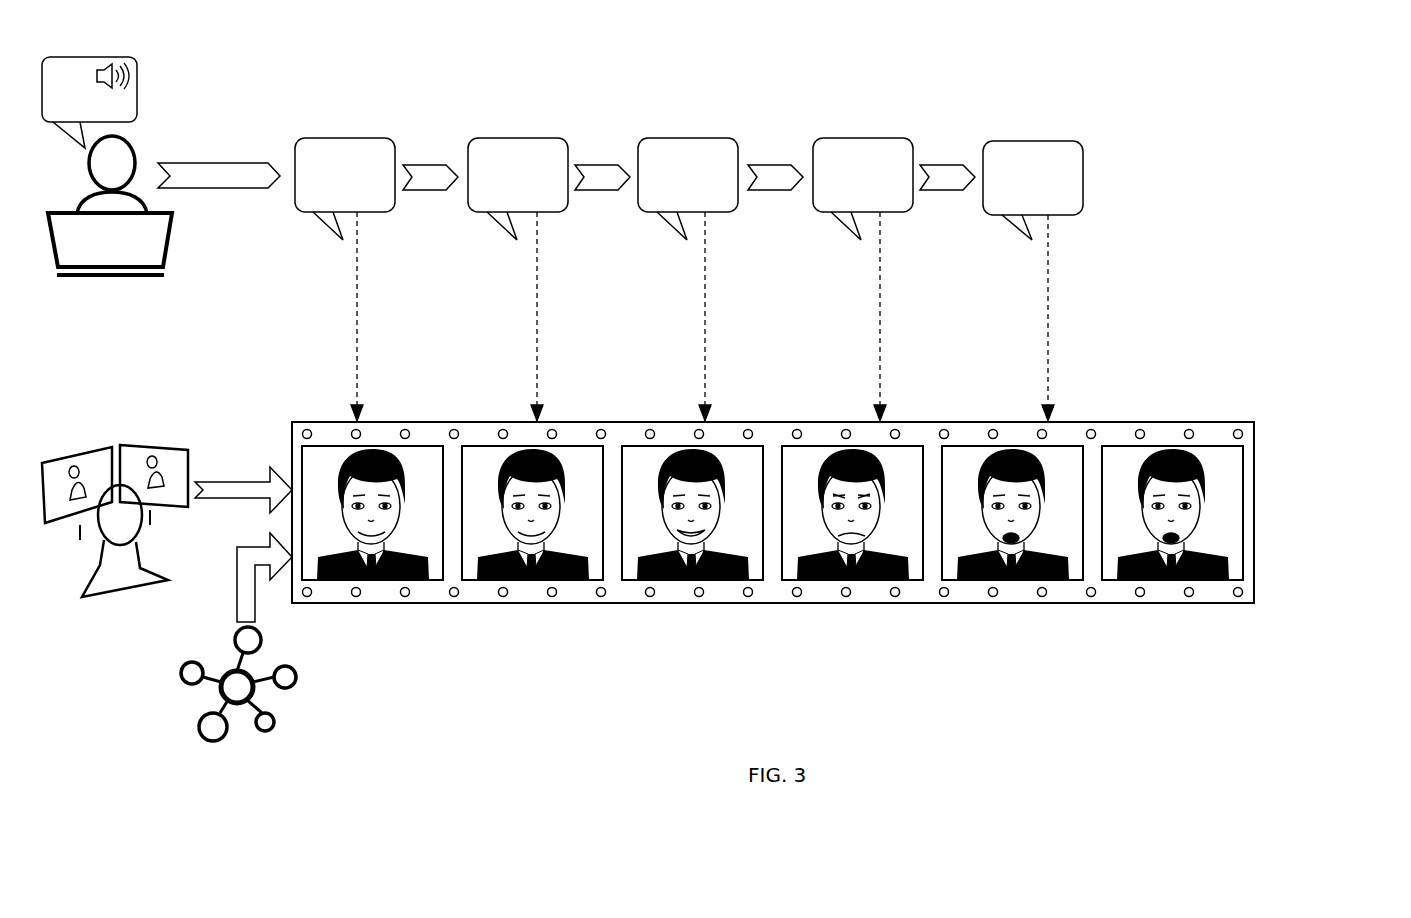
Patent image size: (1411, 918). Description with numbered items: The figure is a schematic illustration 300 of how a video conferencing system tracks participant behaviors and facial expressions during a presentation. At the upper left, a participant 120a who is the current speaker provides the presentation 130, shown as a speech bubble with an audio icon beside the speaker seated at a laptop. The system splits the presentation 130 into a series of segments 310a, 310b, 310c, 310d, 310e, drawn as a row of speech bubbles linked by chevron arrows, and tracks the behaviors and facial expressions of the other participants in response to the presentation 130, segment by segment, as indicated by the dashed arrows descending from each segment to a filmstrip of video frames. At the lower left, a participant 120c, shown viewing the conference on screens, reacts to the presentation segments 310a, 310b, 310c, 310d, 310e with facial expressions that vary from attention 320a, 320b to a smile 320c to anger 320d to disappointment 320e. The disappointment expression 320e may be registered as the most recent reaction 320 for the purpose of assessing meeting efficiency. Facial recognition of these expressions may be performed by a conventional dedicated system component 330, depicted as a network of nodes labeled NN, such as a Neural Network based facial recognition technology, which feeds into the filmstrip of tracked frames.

The schematic illustration 300 is at (1390, 98).
The presentation 130 is at (137, 103).
The participant 120a is at (137, 155).
The participant 120c is at (102, 548).
The segment 310a is at (335, 138).
The segment 310b is at (515, 138).
The segment 310c is at (685, 138).
The segment 310d is at (860, 138).
The segment 310e is at (1024, 141).
The most recent reaction 320 is at (1192, 528).
The attention facial expression 320a is at (405, 527).
The attention facial expression 320b is at (565, 527).
The smile facial expression 320c is at (725, 527).
The anger facial expression 320d is at (885, 527).
The disappointment facial expression 320e is at (1045, 527).
The dedicated system component 330 is at (228, 675).